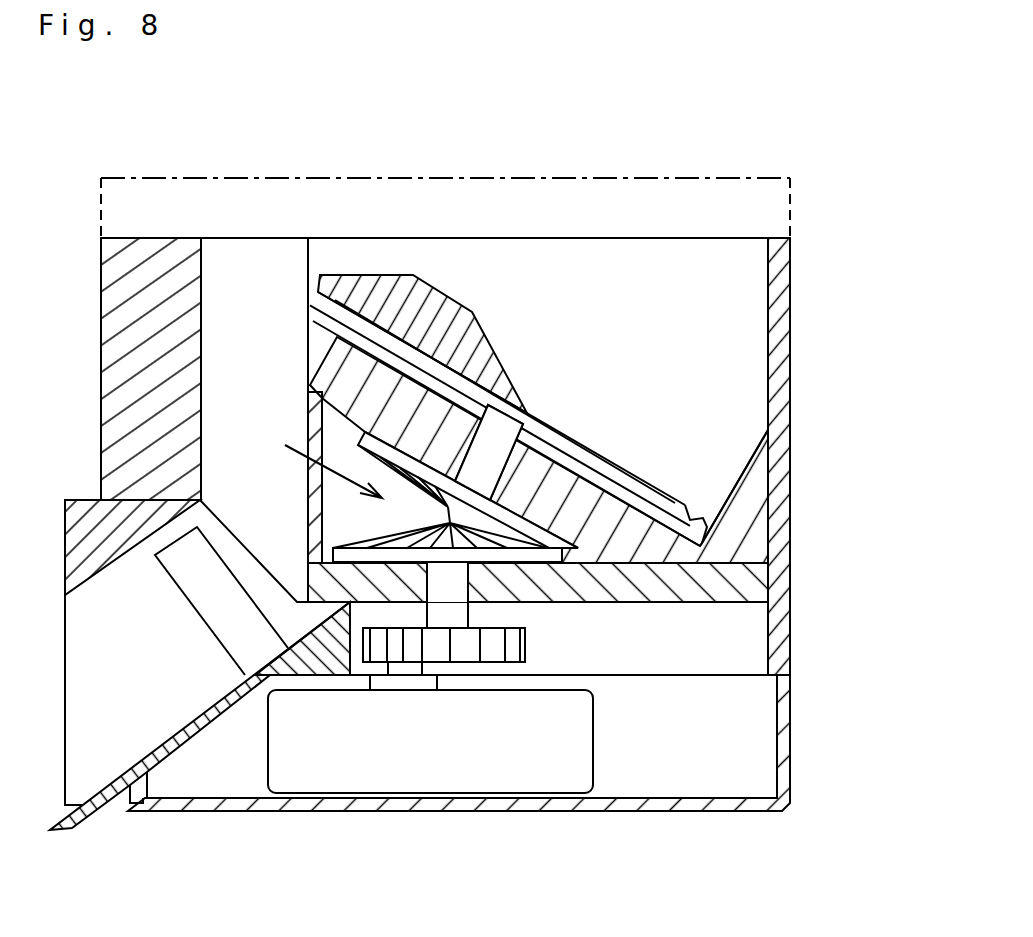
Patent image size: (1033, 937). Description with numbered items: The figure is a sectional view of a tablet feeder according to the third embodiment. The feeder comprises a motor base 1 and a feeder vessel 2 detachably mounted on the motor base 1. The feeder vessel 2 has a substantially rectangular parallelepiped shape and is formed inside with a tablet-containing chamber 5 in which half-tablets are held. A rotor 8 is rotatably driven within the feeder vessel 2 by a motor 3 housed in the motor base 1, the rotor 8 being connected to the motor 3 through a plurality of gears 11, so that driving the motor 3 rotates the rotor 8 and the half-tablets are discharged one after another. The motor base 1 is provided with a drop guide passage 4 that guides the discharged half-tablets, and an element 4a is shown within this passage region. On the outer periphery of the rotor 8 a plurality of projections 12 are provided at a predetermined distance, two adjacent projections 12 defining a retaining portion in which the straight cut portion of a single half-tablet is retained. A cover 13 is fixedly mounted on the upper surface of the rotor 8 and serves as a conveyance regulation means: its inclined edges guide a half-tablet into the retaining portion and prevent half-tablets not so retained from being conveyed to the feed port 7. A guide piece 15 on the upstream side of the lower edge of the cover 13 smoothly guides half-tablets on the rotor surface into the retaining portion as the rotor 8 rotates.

The motor base 1 is at (665, 813).
The feeder vessel 2 is at (790, 370).
The motor 3 is at (593, 747).
The drop guide passage 4 is at (137, 710).
The hopper guide block 4a is at (190, 590).
The tablet-containing chamber 5 is at (723, 350).
The feed port 7 is at (312, 268).
The rotor 8 is at (683, 502).
The gears 11 is at (308, 461).
The projections 12 is at (705, 518).
The cover 13 is at (425, 278).
The guide piece 15 is at (532, 400).